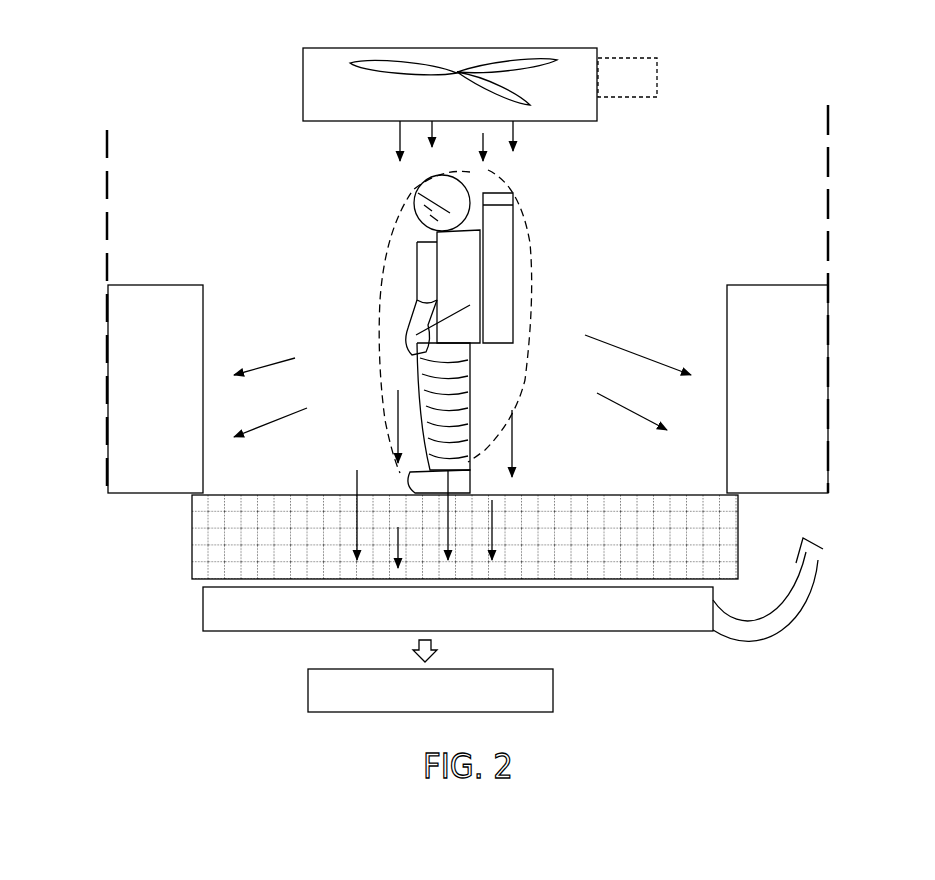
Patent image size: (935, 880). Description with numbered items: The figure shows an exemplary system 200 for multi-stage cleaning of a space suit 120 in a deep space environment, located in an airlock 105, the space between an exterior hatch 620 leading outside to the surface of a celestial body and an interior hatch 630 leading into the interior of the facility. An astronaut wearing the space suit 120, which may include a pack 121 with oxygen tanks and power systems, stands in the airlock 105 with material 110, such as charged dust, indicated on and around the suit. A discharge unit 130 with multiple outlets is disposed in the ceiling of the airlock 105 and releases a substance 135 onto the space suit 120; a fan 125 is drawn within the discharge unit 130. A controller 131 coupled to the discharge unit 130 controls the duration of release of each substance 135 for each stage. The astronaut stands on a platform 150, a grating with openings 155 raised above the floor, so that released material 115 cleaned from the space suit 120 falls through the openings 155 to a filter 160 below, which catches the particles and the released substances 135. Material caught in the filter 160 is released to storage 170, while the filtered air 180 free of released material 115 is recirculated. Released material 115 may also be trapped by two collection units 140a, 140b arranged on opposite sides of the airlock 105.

The system 200 is at (236, 74).
The airlock 105 is at (807, 87).
The discharge unit 130 is at (450, 67).
The fan 125 is at (503, 60).
The controller 131 is at (642, 87).
The substance 135 is at (540, 147).
The interior hatch 630 is at (105, 212).
The exterior hatch 620 is at (829, 250).
The collection unit 140a is at (155, 389).
The collection unit 140b is at (777, 389).
The space suit 120 is at (435, 257).
The material 110 is at (374, 331).
The pack 121 is at (522, 386).
The released material 115 is at (478, 378).
The platform 150 is at (265, 527).
The openings 155 is at (244, 568).
The filter 160 is at (458, 609).
The storage 170 is at (430, 676).
The filtered air 180 is at (755, 613).